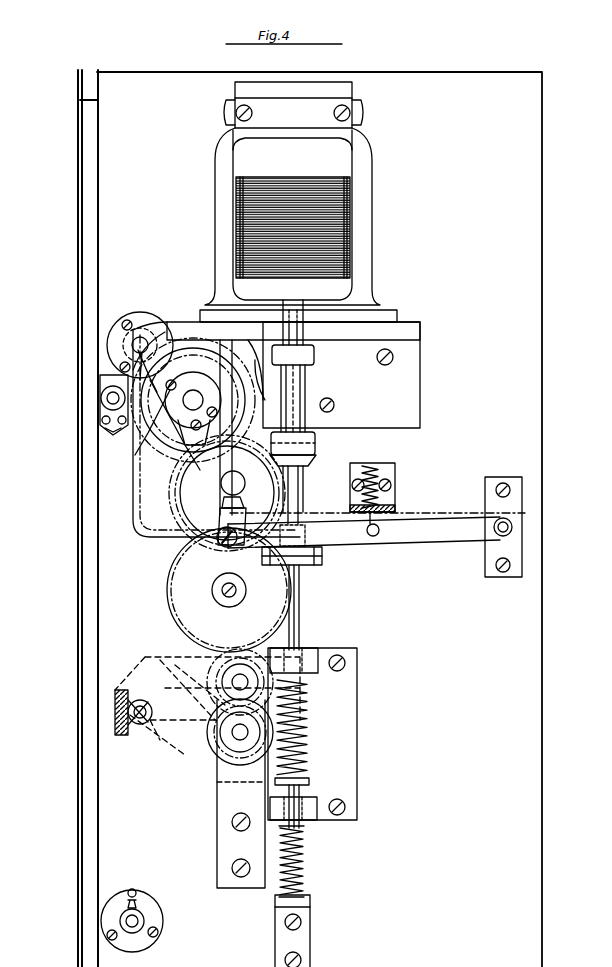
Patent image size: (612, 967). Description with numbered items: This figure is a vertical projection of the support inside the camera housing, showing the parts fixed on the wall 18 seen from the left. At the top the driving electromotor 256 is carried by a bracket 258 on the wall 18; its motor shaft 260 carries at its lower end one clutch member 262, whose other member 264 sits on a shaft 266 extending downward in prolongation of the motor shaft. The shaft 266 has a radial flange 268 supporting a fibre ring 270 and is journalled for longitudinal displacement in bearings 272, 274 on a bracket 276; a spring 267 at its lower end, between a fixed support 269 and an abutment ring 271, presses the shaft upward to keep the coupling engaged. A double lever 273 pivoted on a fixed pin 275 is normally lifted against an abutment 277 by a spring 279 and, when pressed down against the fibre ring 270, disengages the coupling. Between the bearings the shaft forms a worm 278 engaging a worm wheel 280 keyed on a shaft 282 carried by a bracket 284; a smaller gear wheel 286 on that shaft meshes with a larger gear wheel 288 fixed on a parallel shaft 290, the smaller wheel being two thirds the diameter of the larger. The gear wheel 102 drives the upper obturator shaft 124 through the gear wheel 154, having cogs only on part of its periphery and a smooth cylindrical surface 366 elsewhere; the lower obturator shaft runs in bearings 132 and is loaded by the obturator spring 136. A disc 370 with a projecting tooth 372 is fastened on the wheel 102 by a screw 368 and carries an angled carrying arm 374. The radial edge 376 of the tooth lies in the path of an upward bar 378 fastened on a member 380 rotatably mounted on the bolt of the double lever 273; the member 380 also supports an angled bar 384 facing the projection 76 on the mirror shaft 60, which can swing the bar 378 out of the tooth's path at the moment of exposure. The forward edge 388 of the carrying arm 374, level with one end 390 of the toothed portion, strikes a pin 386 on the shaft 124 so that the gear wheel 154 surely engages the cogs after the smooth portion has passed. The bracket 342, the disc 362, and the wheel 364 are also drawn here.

The wall 18 is at (542, 410).
The mirror shaft 60 is at (100, 392).
The projection 76 is at (110, 420).
The gear wheel 102 is at (140, 440).
The upper obturator shaft 124 is at (140, 345).
The bearings 132 is at (150, 905).
The obturator spring 136 is at (145, 920).
The gear wheel 154 is at (140, 330).
The driving electromotor 256 is at (355, 210).
The bracket 258 is at (420, 388).
The motor shaft 260 is at (318, 410).
The clutch member 262 is at (315, 443).
The clutch member 264 is at (312, 462).
The shaft 266 is at (296, 520).
The spring 267 is at (304, 864).
The radial flange 268 is at (322, 560).
The fixed support 269 is at (310, 918).
The fibre ring 270 is at (322, 551).
The abutment ring 271 is at (303, 826).
The bearing 272 is at (315, 650).
The double lever 273 is at (438, 535).
The bearing 274 is at (310, 815).
The fixed pin 275 is at (498, 520).
The bracket 276 is at (357, 757).
The abutment 277 is at (376, 522).
The worm 278 is at (307, 720).
The spring 279 is at (372, 478).
The worm wheel 280 is at (210, 740).
The shaft 282 is at (238, 732).
The bracket 284 is at (217, 790).
The smaller gear wheel 286 is at (241, 796).
The larger gear wheel 288 is at (210, 688).
The shaft 290 is at (240, 678).
The bracket 342 is at (120, 735).
The disk 362 is at (162, 623).
The wheel 364 is at (190, 497).
The smooth cylindrical surface 366 is at (198, 401).
The screw 368 is at (193, 407).
The disc 370 is at (150, 410).
The projecting tooth 372 is at (228, 405).
The carrying arm 374 is at (232, 450).
The radial edge 376 is at (232, 400).
The bar 378 is at (242, 492).
The member 380 is at (244, 512).
The bar 384 is at (160, 538).
The pin 386 is at (140, 342).
The forward edge 388 is at (217, 493).
The end of toothed portion 390 is at (219, 483).